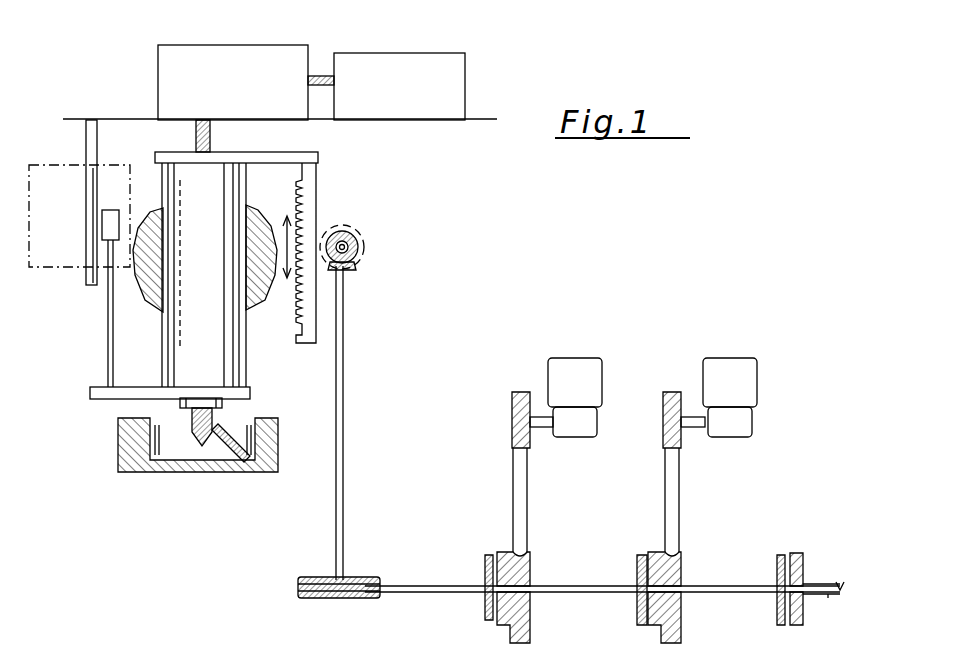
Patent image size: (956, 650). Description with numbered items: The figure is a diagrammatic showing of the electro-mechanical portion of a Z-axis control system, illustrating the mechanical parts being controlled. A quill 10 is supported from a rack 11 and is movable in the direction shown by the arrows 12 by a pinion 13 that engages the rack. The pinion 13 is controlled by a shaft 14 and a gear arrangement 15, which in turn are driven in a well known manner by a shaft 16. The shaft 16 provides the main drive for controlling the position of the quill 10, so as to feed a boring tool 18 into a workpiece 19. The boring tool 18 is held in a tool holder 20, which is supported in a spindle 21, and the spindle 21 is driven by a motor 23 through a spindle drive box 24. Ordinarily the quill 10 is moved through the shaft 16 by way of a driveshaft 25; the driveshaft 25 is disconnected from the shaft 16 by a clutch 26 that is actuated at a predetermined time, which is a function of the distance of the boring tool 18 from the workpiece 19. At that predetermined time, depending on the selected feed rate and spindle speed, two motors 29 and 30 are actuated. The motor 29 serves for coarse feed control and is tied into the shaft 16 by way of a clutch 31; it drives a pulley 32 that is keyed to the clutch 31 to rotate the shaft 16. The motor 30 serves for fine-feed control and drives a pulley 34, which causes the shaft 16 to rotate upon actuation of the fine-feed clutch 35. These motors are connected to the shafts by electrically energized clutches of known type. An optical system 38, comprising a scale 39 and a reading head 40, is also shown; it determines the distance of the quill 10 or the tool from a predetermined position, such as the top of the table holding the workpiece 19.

The quill 10 is at (180, 350).
The rack 11 is at (312, 192).
The arrows 12 is at (283, 220).
The pinion 13 is at (360, 237).
The shaft 14 is at (348, 414).
The gear arrangement 15 is at (330, 576).
The shaft 16 is at (437, 585).
The boring tool 18 is at (222, 446).
The workpiece 19 is at (128, 470).
The tool holder 20 is at (198, 432).
The spindle 21 is at (228, 404).
The motor 23 is at (398, 60).
The spindle drive box 24 is at (237, 48).
The driveshaft 25 is at (830, 585).
The clutch 26 is at (776, 610).
The motor 29 is at (574, 366).
The motor 30 is at (724, 370).
The clutch 31 is at (486, 557).
The pulley 32 is at (525, 568).
The pulley 34 is at (670, 572).
The fine-feed clutch 35 is at (636, 606).
The optical system 38 is at (71, 275).
The scale 39 is at (86, 230).
The reading head 40 is at (117, 212).